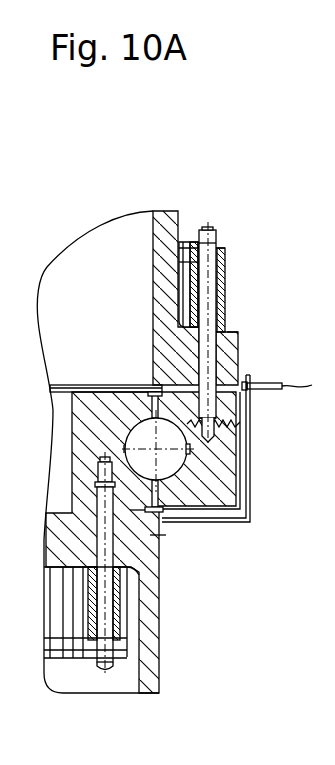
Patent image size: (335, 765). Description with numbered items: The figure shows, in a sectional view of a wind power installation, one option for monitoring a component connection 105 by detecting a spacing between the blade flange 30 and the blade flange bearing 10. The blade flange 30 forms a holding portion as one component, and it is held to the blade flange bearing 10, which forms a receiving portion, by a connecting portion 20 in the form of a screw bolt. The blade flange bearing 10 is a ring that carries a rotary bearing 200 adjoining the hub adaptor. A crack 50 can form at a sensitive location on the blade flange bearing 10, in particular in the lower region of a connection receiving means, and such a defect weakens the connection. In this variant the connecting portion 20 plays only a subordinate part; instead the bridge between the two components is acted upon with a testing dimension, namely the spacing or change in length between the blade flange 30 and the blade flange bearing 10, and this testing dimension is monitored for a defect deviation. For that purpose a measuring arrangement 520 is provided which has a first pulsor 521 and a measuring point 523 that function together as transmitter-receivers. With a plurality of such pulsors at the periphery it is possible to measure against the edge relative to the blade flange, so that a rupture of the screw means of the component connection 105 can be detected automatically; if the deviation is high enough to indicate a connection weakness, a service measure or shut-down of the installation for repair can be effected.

The blade flange 30 is at (166, 212).
The connecting portion 20 is at (210, 228).
The component connection 105 is at (262, 232).
The second measuring arrangement 520 is at (270, 358).
The first pulsor 521 is at (266, 393).
The crack 50 is at (244, 456).
The blade flange bearing 10 is at (183, 503).
The rotary bearing 200 is at (221, 509).
The measuring point 523 is at (163, 540).